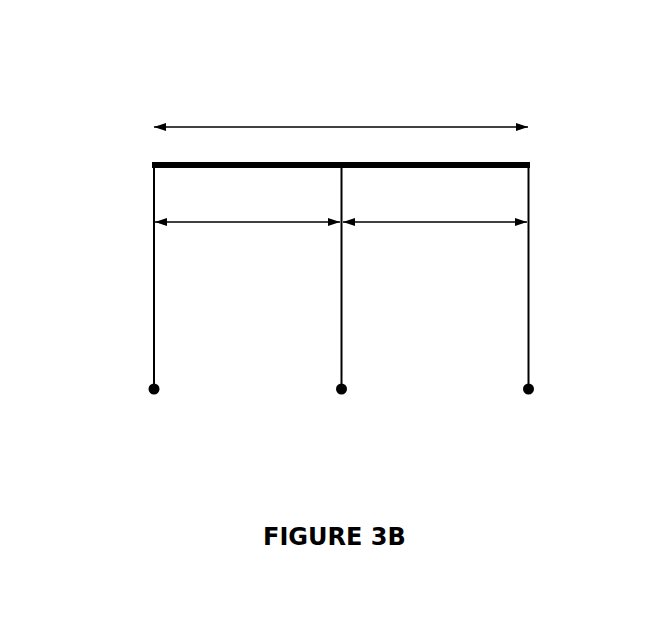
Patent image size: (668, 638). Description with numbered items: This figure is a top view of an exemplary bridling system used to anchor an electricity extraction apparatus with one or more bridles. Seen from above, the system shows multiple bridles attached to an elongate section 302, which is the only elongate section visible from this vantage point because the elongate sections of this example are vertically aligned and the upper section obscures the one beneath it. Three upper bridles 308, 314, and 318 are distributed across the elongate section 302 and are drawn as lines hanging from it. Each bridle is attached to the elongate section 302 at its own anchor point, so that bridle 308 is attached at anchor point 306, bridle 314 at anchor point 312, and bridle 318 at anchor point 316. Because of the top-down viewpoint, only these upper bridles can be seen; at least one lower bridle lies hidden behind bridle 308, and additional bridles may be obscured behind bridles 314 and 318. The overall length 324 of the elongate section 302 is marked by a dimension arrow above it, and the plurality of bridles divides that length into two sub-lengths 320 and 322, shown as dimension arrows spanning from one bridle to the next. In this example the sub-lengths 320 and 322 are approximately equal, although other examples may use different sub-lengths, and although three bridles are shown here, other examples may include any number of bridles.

The elongate section 302 is at (167, 162).
The anchor point 306 is at (522, 397).
The bridle 308 is at (528, 278).
The anchor point 312 is at (333, 397).
The bridle 314 is at (341, 282).
The anchor point 316 is at (147, 395).
The bridle 318 is at (154, 277).
The sub-length 320 is at (182, 221).
The sub-length 322 is at (427, 221).
The length 324 is at (388, 126).